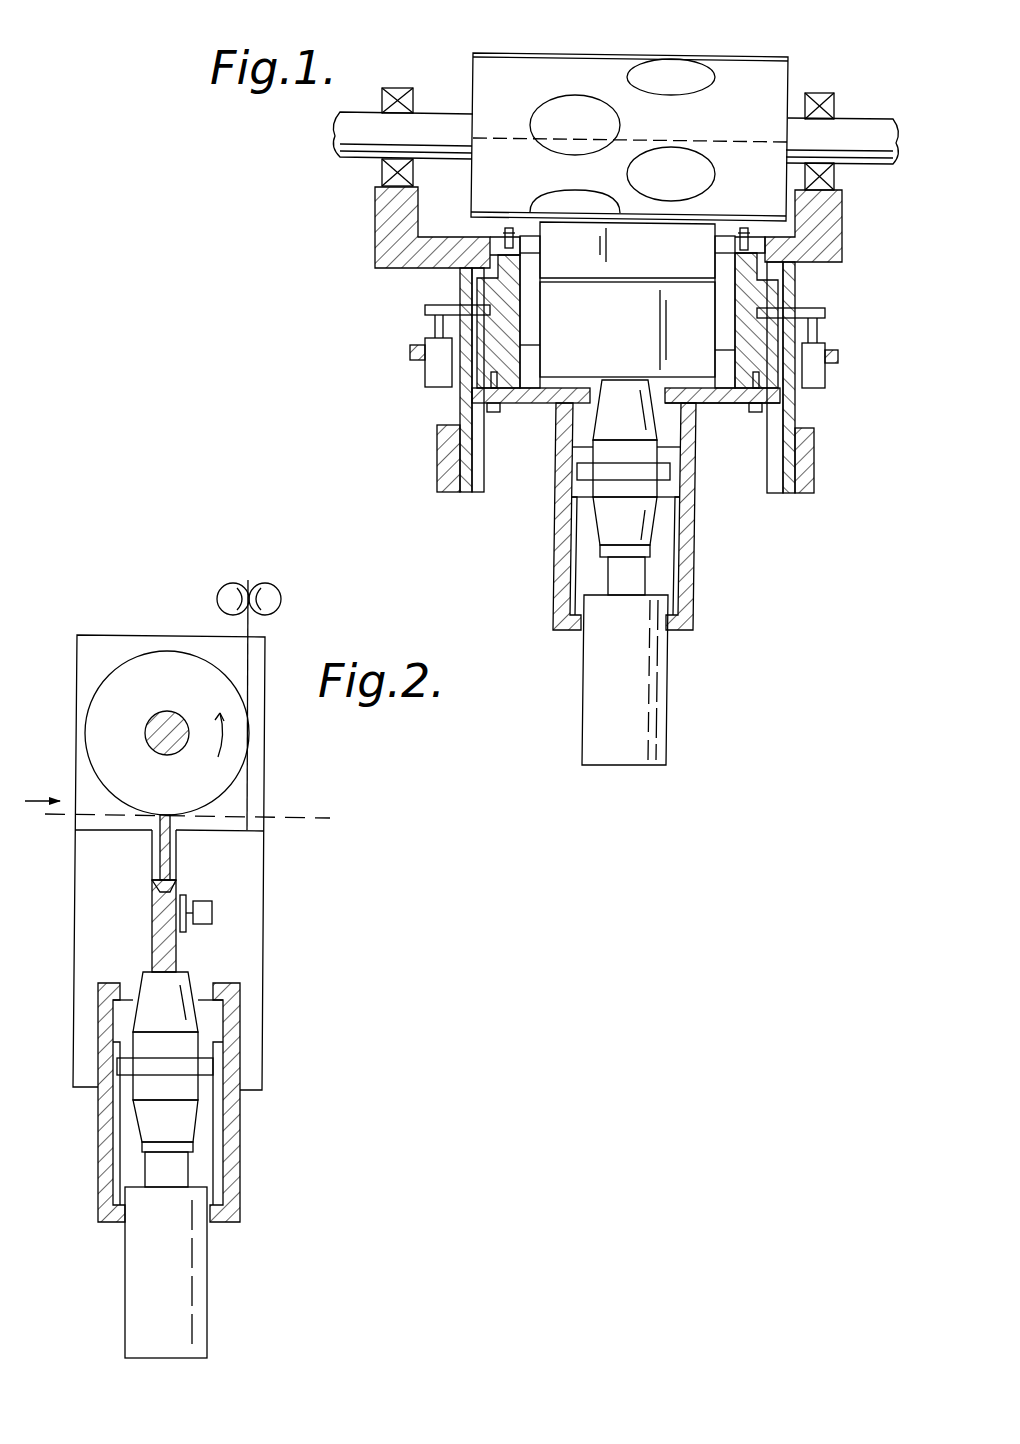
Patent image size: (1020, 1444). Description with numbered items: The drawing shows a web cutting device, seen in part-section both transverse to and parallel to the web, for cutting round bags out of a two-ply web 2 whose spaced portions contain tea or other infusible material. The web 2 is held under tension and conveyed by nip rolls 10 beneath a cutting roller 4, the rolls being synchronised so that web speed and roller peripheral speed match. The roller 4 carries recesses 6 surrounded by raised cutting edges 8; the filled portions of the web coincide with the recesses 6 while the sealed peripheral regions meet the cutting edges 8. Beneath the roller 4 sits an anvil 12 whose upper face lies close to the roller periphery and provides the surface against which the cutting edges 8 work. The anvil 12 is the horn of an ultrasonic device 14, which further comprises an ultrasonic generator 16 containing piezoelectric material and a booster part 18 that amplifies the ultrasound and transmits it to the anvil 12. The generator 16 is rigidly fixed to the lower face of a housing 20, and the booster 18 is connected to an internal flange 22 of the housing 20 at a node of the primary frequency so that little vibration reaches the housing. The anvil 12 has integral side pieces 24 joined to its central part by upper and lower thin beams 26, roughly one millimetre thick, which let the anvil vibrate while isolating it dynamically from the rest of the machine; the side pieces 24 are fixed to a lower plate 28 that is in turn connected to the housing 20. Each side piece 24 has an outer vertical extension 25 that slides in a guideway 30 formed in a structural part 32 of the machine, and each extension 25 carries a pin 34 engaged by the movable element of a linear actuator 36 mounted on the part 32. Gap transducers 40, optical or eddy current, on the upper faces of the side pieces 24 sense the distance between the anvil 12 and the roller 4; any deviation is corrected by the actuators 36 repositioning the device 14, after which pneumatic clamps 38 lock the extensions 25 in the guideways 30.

In FIG. 2, the two-ply web 2 is at (60, 816).
In FIG. 1, the cutting roller 4 is at (745, 66).
In FIG. 2, the cutting roller 4 is at (100, 700).
In FIG. 1, the recesses 6 is at (596, 100).
In FIG. 1, the raised cutting edges 8 is at (545, 195).
In FIG. 2, the nip rolls 10 is at (217, 600).
In FIG. 1, the anvil 12 is at (644, 253).
In FIG. 2, the anvil 12 is at (168, 862).
In FIG. 1, the ultrasonic device 14 is at (523, 557).
In FIG. 2, the ultrasonic device 14 is at (258, 1168).
In FIG. 1, the ultrasonic generator 16 is at (636, 682).
In FIG. 2, the ultrasonic generator 16 is at (177, 1278).
In FIG. 1, the booster 18 is at (637, 532).
In FIG. 2, the booster 18 is at (185, 1042).
In FIG. 1, the housing 20 is at (690, 585).
In FIG. 2, the housing 20 is at (96, 1160).
In FIG. 1, the internal flange 22 is at (568, 481).
In FIG. 2, the internal flange 22 is at (108, 1070).
In FIG. 1, the side pieces 24 is at (488, 290).
In FIG. 1, the side piece extensions 25 is at (512, 373).
In FIG. 1, the thin strips or beams 26 is at (540, 250).
In FIG. 1, the lower plate 28 is at (725, 405).
In FIG. 1, the guideways 30 is at (478, 462).
In FIG. 1, the structural part 32 is at (378, 244).
In FIG. 1, the extending pin 34 is at (425, 310).
In FIG. 1, the linear actuator 36 is at (432, 368).
In FIG. 2, the pneumatic clamps 38 is at (212, 914).
In FIG. 1, the gap transducers 40 is at (503, 232).